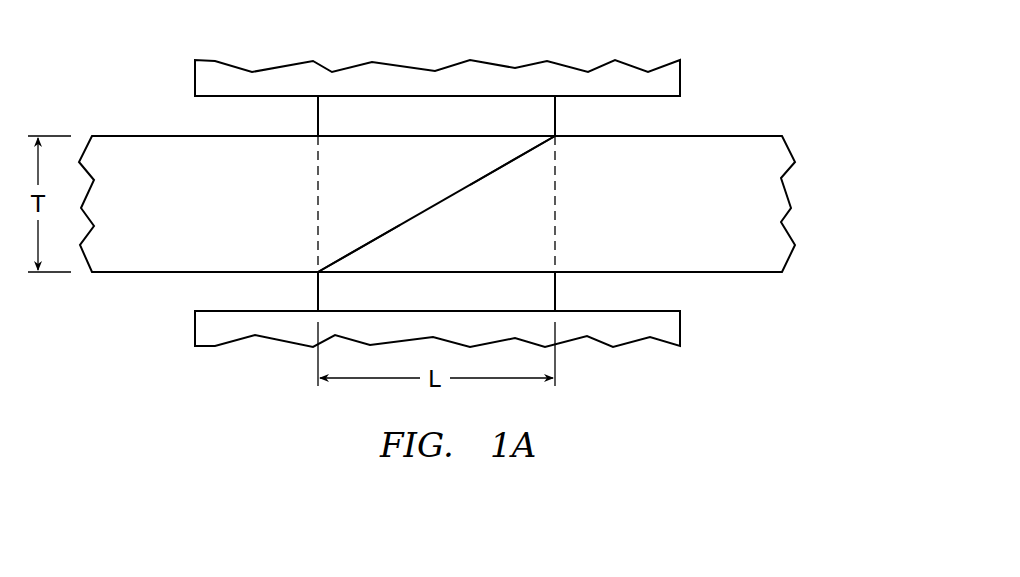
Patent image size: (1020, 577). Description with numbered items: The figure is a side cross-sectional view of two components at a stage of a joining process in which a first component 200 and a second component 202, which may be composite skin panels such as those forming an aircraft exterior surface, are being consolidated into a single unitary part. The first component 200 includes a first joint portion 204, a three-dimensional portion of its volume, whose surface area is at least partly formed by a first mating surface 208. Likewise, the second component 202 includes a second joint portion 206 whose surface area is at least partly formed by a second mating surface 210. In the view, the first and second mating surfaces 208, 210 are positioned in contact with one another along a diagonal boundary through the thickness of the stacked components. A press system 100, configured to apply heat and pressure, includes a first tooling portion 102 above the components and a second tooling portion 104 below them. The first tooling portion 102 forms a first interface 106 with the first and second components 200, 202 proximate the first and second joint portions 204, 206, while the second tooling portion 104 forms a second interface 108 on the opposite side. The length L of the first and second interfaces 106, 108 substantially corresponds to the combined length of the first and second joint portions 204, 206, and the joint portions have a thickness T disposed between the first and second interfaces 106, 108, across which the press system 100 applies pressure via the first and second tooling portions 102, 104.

The press system 100 is at (690, 76).
The first tooling portion 102 is at (458, 128).
The second tooling portion 104 is at (458, 303).
The first interface 106 is at (511, 136).
The second interface 108 is at (509, 273).
The first component 200 is at (153, 276).
The second component 202 is at (697, 276).
The first joint portion 204 is at (393, 188).
The second joint portion 206 is at (530, 249).
The first mating surface 208 is at (358, 248).
The second mating surface 210 is at (508, 163).